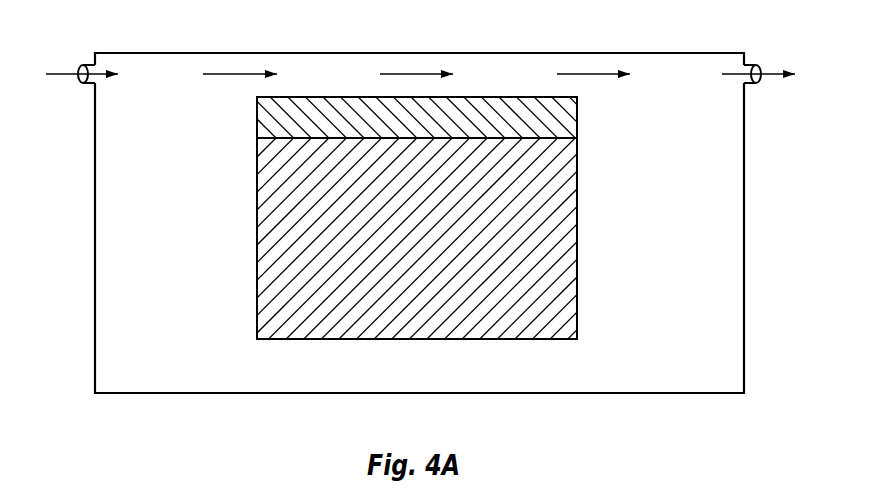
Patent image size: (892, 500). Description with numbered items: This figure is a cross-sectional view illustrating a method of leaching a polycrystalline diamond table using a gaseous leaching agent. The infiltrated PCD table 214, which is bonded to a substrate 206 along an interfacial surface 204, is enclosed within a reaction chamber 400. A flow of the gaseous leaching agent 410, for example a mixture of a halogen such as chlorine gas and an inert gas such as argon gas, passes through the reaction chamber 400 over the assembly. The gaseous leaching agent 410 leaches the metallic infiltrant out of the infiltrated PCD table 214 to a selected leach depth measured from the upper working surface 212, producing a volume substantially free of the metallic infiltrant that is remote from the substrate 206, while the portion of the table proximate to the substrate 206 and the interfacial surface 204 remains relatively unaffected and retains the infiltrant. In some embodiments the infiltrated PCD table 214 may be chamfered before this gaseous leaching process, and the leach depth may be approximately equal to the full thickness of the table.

The reaction chamber 400 is at (730, 312).
The gaseous leaching agent 410 is at (418, 74).
The upper working surface 212 is at (346, 97).
The infiltrated PCD table 214 is at (570, 113).
The interfacial surface 204 is at (548, 140).
The substrate 206 is at (570, 210).